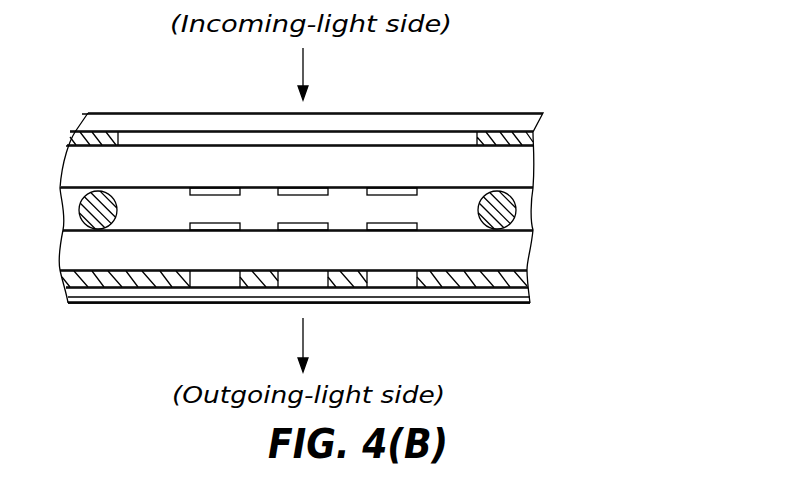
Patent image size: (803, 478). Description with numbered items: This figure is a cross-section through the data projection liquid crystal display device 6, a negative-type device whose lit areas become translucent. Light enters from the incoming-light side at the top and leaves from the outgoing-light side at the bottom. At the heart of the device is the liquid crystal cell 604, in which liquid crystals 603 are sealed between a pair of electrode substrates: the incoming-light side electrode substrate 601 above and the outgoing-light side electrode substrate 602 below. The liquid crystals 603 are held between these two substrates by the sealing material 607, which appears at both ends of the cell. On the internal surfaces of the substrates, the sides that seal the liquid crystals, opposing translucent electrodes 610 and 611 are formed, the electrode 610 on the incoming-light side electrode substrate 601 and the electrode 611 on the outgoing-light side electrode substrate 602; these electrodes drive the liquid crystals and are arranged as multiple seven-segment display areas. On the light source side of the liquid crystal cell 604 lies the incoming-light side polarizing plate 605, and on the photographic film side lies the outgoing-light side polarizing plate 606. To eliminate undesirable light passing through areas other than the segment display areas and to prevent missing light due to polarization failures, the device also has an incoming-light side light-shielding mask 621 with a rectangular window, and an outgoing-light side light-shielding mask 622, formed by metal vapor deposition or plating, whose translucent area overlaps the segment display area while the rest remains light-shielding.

The data projection liquid crystal display device 6 is at (717, 108).
The incoming-light side electrode substrate 601 is at (532, 189).
The outgoing-light side electrode substrate 602 is at (492, 278).
The liquid crystals 603 is at (495, 257).
The liquid crystal cell 604 is at (628, 185).
The incoming-light side polarizing plate 605 is at (525, 123).
The outgoing-light side polarizing plate 606 is at (458, 298).
The sealing material 607 is at (448, 222).
The translucent electrode 610 is at (308, 188).
The translucent electrode 611 is at (297, 228).
The incoming-light side light-shielding mask 621 is at (502, 168).
The outgoing-light side light-shielding mask 622 is at (530, 300).